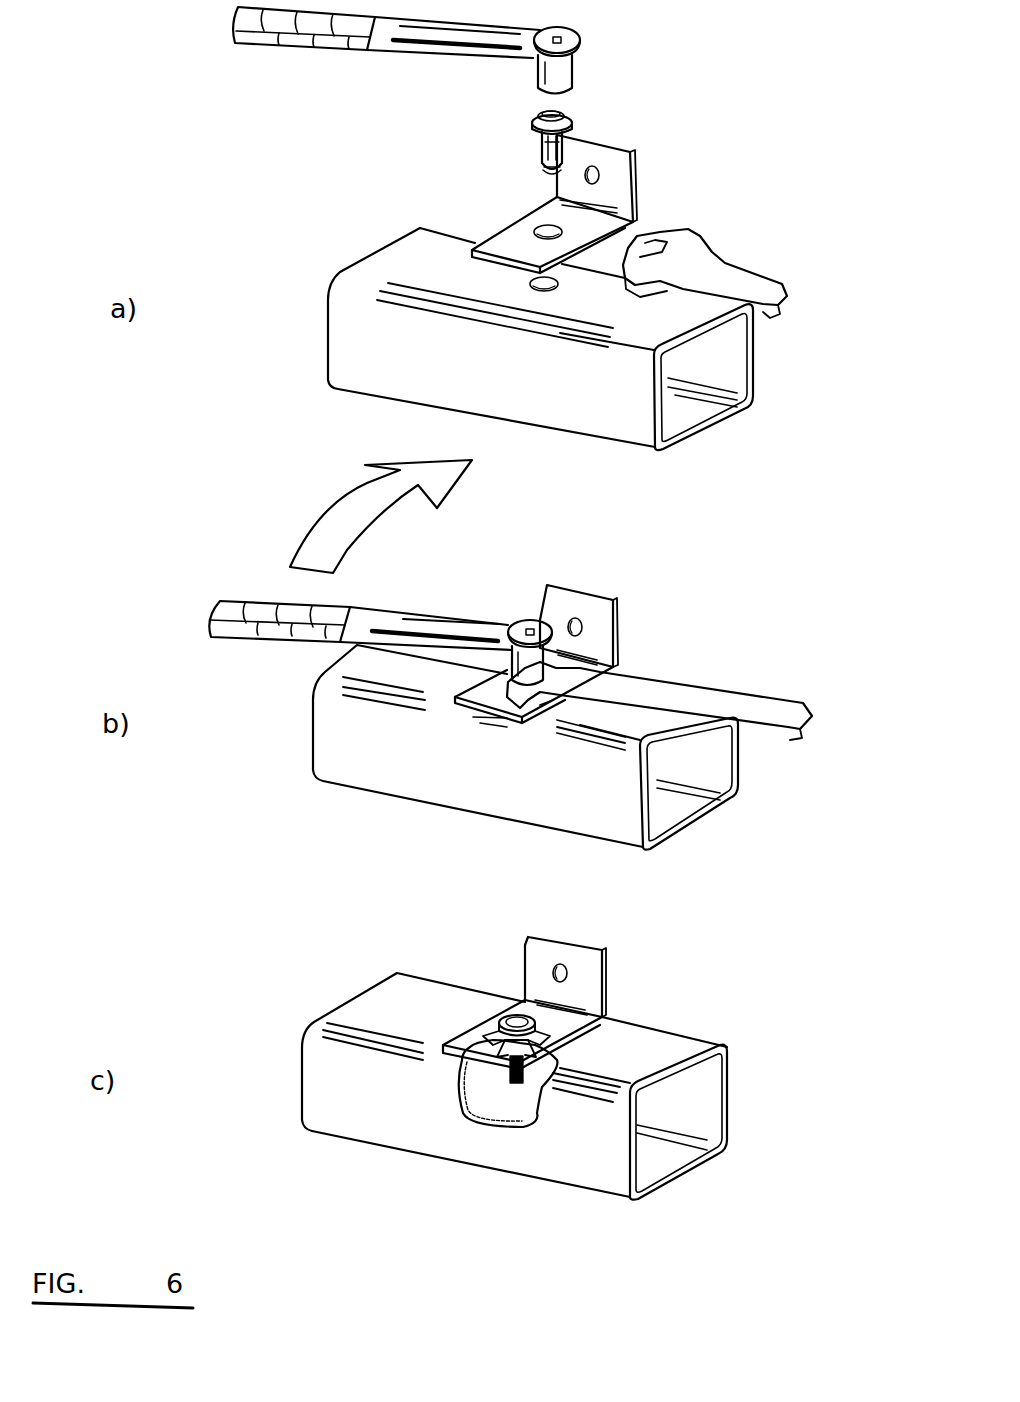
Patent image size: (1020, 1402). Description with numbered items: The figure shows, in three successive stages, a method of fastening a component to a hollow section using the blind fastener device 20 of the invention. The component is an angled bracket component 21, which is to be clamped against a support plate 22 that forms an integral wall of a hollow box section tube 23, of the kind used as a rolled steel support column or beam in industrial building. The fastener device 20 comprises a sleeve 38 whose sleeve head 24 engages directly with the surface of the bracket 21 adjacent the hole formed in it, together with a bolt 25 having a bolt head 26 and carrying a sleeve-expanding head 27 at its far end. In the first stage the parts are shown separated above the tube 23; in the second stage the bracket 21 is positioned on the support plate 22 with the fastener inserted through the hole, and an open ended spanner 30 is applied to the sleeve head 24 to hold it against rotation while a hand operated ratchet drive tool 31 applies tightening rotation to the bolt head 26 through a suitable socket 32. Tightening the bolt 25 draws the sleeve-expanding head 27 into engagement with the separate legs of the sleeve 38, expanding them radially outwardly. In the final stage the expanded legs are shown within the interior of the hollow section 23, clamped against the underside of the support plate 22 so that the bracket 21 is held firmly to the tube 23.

The blind fastener device 20 is at (507, 125).
The angled bracket component 21 is at (620, 182).
The support plate 22 is at (648, 325).
The hollow box section tube 23 is at (593, 395).
The sleeve head 24 is at (573, 122).
The bolt 25 is at (510, 1087).
The bolt head 26 is at (563, 112).
The sleeve-expanding head 27 is at (540, 167).
The open ended spanner 30 is at (733, 277).
The hand operated ratchet drive tool 31 is at (433, 50).
The socket 32 is at (563, 80).
The sleeve 38 is at (537, 141).